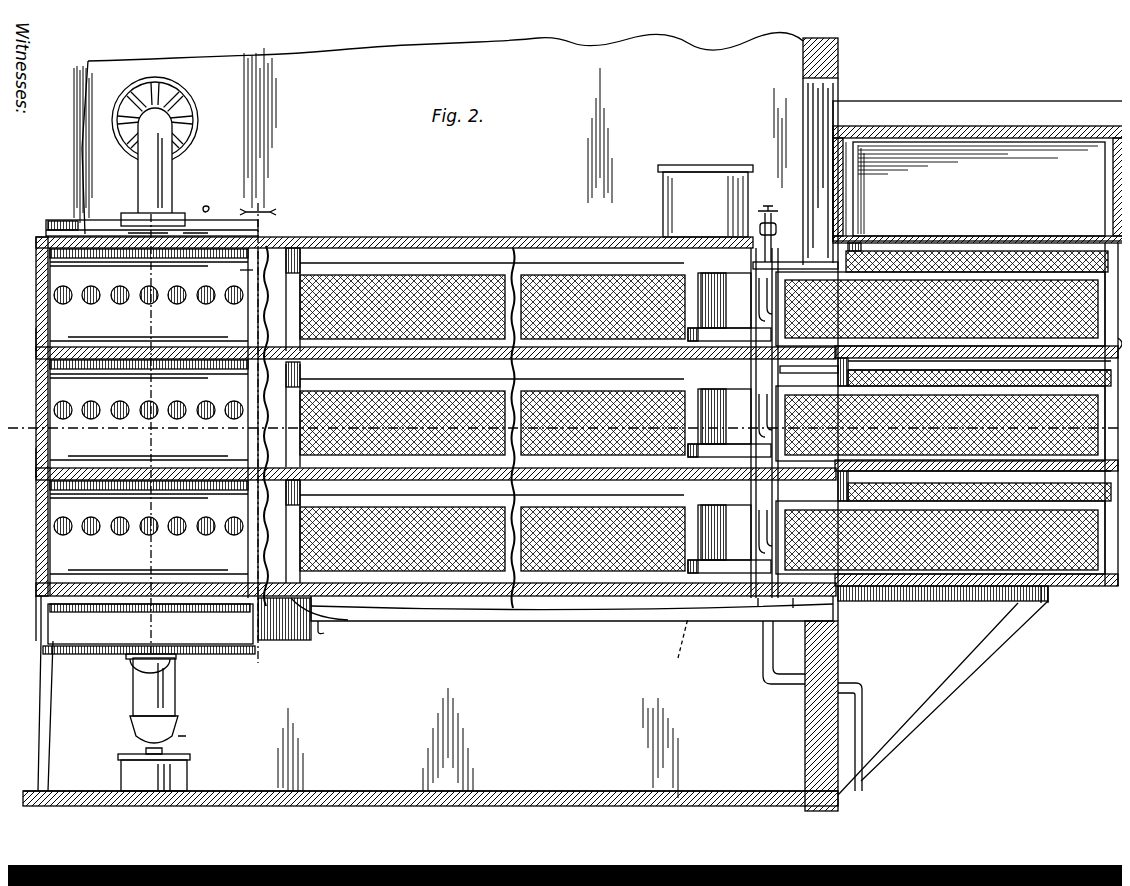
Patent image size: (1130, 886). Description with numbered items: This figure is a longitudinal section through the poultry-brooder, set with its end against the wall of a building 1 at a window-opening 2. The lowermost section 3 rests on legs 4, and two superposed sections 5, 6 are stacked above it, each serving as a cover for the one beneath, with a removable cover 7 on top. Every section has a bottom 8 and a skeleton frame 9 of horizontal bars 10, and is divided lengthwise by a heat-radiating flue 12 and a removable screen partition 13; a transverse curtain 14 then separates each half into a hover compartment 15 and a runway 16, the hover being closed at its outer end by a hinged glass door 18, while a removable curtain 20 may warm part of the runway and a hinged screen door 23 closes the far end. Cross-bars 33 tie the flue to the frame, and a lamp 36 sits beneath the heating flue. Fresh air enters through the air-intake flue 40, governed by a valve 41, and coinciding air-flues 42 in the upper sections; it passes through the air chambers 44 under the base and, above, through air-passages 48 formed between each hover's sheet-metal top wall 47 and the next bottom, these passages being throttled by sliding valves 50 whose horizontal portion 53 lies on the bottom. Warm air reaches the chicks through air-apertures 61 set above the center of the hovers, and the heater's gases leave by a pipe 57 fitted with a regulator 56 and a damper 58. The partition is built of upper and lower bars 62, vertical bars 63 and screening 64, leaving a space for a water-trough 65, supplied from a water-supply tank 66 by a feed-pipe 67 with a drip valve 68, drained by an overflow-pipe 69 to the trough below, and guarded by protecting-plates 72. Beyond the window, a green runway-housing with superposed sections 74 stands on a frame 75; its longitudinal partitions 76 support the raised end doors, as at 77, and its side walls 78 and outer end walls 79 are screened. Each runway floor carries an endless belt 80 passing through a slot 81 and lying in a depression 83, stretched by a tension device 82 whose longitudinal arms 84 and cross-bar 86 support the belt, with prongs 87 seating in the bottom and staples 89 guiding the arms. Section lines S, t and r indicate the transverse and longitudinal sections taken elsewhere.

The wall of a building 1 is at (793, 68).
The window-opening 2 is at (795, 128).
The lowermost section 3 is at (565, 592).
The legs 4 is at (45, 660).
The superposed section 5 is at (28, 445).
The superposed section 6 is at (28, 330).
The removable cover 7 is at (425, 267).
The bottom 8 is at (235, 345).
The skeleton frame 9 is at (522, 255).
The horizontal bars 10 is at (575, 240).
The heat-radiating flue 12 is at (142, 298).
The removable screen partition 13 is at (350, 267).
The transverse curtain 14 is at (240, 308).
The hover compartment 15 is at (82, 428).
The runway 16 is at (405, 290).
The glass door 18 is at (28, 298).
The removable curtain 20 is at (520, 253).
The hinged screen door 23 is at (766, 254).
The cross-bars 33 is at (262, 240).
The lamp 36 is at (167, 690).
The air-intake flue 40 is at (235, 520).
The valve 41 is at (312, 626).
The air-flue 42 is at (190, 437).
The air chambers 44 is at (160, 636).
The wall 47 is at (105, 252).
The air-passage 48 is at (138, 254).
The valves 50 is at (160, 345).
The horizontal portion 53 is at (170, 398).
The regulator 56 is at (190, 108).
The pipe 57 is at (165, 161).
The damper 58 is at (205, 200).
The air-apertures 61 is at (114, 297).
The upper and lower bars 62 is at (322, 255).
The vertical bars 63 is at (290, 250).
The screening 64 is at (505, 250).
The water-trough 65 is at (718, 325).
The water-supply tank 66 is at (705, 201).
The feed-pipe 67 is at (766, 228).
The valve 68 is at (761, 200).
The overflow-pipe 69 is at (745, 391).
The protecting-plates 72 is at (712, 268).
The superposed sections of runway-housing 74 is at (1095, 300).
The frame 75 is at (943, 698).
The longitudinal partitions 76 is at (1095, 265).
The door-supporting position 77 is at (850, 240).
The side walls 78 is at (1015, 245).
The outer end walls 79 is at (979, 416).
The endless belt 80 is at (590, 372).
The slot 81 is at (279, 433).
The tension device 82 is at (702, 600).
The depression 83 is at (430, 345).
The longitudinal arms 84 is at (788, 608).
The cross-bar 86 is at (845, 607).
The prongs 87 is at (675, 647).
The staples 89 is at (763, 610).
The section line s s S is at (172, 660).
The section line t t is at (258, 433).
The section line r r is at (565, 424).